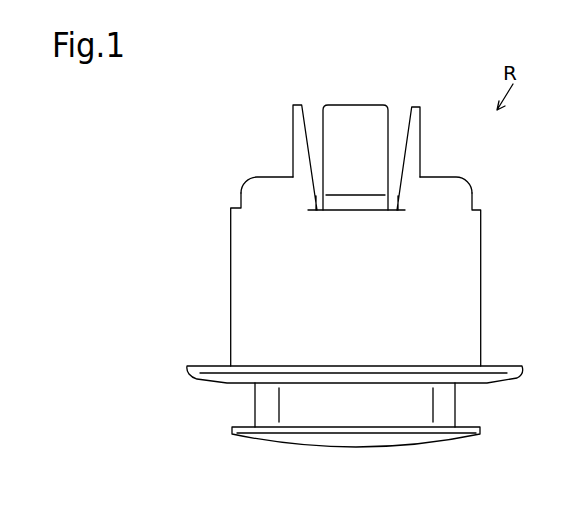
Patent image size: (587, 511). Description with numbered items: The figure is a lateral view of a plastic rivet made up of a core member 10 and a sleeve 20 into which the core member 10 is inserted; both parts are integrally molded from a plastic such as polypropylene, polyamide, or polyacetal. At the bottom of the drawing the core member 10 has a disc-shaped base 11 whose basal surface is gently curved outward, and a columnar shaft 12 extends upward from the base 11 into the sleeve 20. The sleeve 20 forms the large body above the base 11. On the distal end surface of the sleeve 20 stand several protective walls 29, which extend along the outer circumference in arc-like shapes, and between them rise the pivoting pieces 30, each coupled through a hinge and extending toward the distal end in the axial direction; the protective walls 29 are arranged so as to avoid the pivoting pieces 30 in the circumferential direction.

The core member 10 is at (457, 403).
The base 11 is at (268, 440).
The shaft 12 is at (254, 402).
The sleeve 20 is at (483, 290).
The protective walls 29 is at (241, 193).
The pivoting piece 30 is at (358, 103).